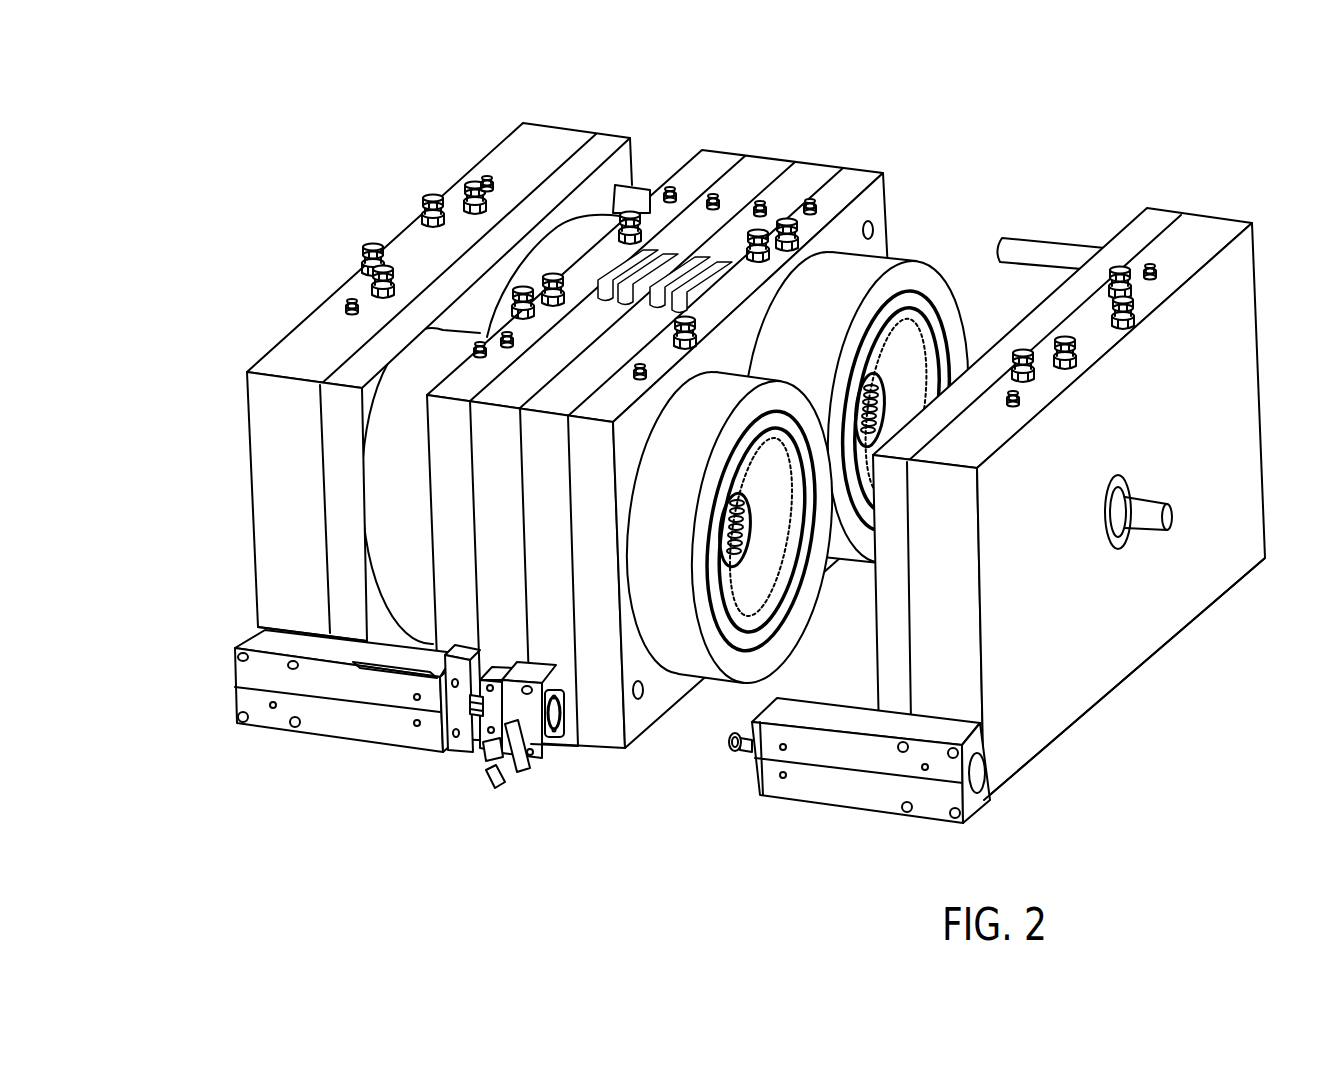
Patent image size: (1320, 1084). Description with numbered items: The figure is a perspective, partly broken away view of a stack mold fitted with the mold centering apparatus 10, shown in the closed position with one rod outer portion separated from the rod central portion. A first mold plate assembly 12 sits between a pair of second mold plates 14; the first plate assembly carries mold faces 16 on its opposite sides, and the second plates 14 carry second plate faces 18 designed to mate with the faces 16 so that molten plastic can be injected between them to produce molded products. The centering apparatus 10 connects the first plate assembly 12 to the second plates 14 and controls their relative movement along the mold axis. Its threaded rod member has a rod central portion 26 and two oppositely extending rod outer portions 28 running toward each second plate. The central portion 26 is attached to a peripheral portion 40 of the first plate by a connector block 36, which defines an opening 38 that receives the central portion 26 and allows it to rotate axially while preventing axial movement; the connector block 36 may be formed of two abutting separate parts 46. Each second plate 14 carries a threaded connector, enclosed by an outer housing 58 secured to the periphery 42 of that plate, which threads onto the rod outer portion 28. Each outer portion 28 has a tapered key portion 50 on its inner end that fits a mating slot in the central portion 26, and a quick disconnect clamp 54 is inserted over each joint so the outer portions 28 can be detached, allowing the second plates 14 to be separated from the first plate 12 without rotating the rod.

The centering apparatus 10 is at (205, 713).
The first mold plate assembly 12 is at (793, 163).
The second mold plates 14 is at (592, 133).
The mold faces 16 is at (920, 277).
The second plate faces 18 is at (992, 327).
The rod central portion 26 is at (563, 737).
The rod outer portions 28 is at (453, 708).
The connector block 36 is at (527, 660).
The opening 38 is at (547, 723).
The peripheral portion of the first plate 40 is at (558, 617).
The periphery of the second plate 42 is at (277, 583).
The separate parts of the connector block 46 is at (463, 693).
The key portion 50 is at (735, 742).
The quick disconnect clamp 54 is at (480, 733).
The outer housing 58 is at (317, 713).